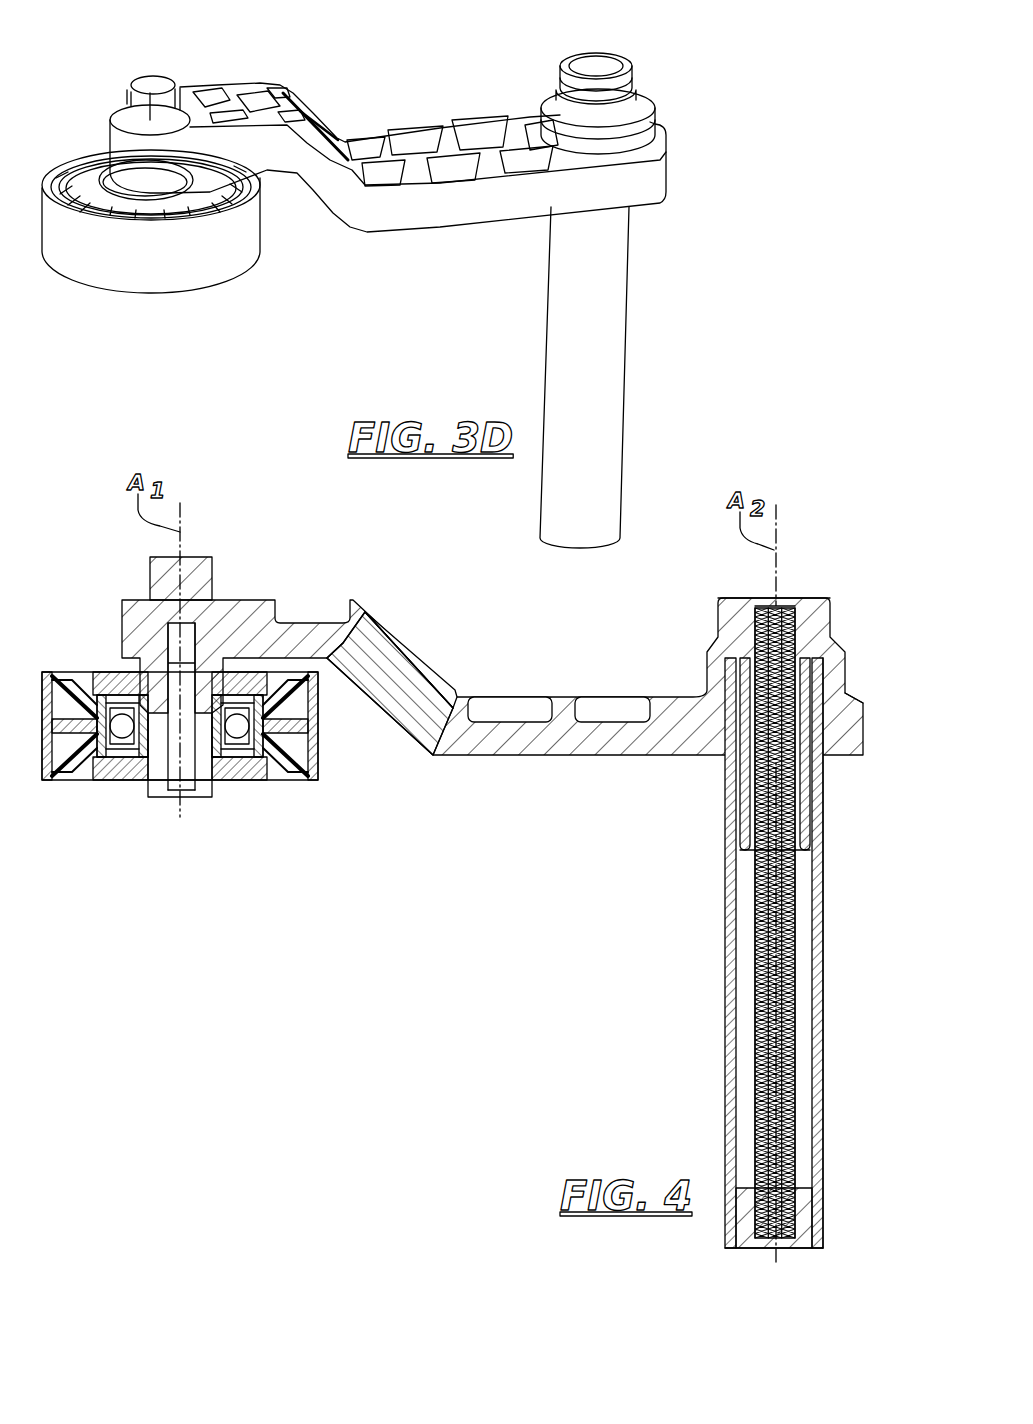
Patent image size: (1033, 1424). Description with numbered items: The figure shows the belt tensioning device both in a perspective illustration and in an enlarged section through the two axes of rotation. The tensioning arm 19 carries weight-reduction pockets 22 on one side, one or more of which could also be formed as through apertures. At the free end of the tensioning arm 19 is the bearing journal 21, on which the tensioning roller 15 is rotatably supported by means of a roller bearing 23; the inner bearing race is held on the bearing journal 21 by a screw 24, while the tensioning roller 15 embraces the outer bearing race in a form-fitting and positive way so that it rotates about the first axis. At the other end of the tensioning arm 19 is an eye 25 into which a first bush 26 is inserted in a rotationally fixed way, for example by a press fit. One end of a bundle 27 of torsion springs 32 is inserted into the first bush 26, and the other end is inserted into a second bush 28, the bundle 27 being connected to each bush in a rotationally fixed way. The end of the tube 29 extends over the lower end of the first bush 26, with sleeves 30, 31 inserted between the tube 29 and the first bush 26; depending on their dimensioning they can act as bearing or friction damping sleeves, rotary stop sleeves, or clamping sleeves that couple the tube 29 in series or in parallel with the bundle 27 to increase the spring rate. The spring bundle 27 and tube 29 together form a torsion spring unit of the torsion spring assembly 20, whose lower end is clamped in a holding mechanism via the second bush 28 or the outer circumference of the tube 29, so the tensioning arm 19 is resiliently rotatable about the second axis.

In FIG. 3D, the tensioning roller 15 is at (137, 262).
In FIG. 4, the tensioning roller 15 is at (43, 782).
In FIG. 3D, the tensioning arm 19 is at (414, 143).
In FIG. 4, the tensioning arm 19 is at (462, 716).
In FIG. 3D, the torsion spring assembly 20 is at (607, 357).
In FIG. 4, the torsion spring assembly 20 is at (751, 899).
In FIG. 4, the bearing journal 21 is at (157, 760).
In FIG. 4, the pockets 22 is at (600, 710).
In FIG. 4, the roller bearing 23 is at (258, 760).
In FIG. 4, the screw 24 is at (192, 784).
In FIG. 4, the eye 25 is at (790, 628).
In FIG. 4, the first bush 26 is at (800, 612).
In FIG. 4, the bundle of torsion springs 27 is at (810, 935).
In FIG. 4, the second bush 28 is at (800, 1238).
In FIG. 4, the tube 29 is at (822, 1076).
In FIG. 4, the sleeve 30 is at (818, 806).
In FIG. 4, the sleeve 31 is at (808, 712).
In FIG. 4, the torsion springs 32 is at (775, 1016).